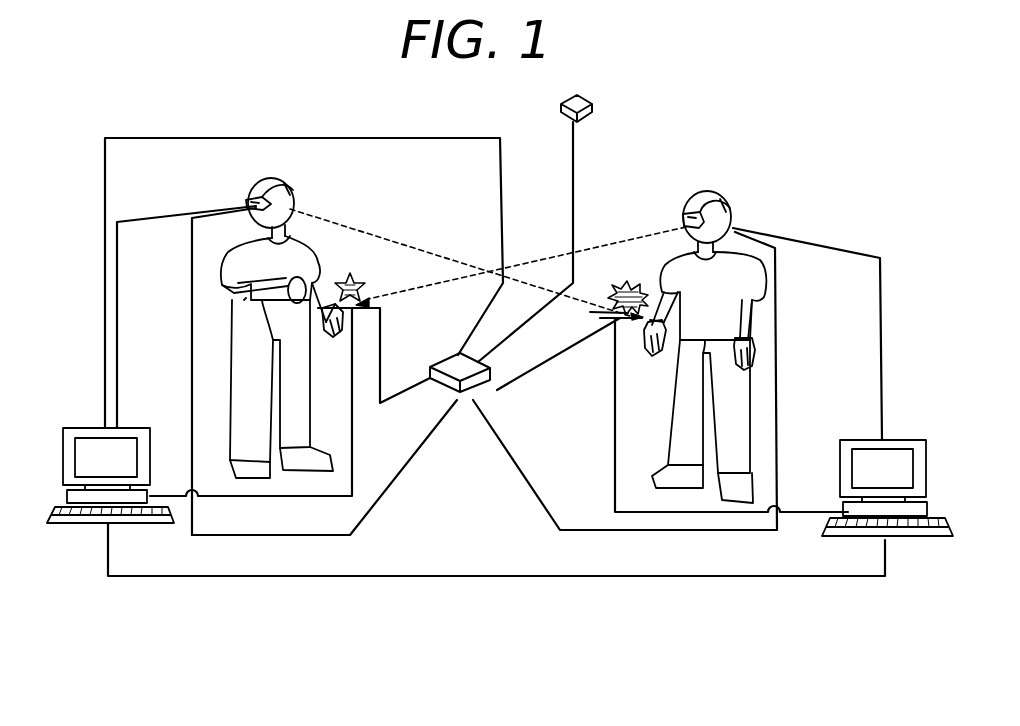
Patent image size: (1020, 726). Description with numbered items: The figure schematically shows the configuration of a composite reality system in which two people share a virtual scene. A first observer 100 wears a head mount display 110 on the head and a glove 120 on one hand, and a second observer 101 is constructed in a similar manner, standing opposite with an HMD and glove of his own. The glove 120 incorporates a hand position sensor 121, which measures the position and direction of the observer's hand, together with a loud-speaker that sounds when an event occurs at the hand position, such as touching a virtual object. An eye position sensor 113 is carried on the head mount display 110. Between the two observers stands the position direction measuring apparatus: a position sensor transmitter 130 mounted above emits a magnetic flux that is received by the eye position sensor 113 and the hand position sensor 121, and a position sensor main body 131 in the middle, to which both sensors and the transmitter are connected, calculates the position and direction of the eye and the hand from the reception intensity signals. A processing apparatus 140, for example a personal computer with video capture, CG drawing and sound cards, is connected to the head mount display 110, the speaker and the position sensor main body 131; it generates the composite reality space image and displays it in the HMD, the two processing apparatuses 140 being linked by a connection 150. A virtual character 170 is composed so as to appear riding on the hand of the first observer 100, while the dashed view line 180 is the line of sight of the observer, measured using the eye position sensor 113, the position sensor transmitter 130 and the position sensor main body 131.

The first observer 100 is at (673, 418).
The second observer 101 is at (305, 415).
The head mount display 110 is at (297, 201).
The eye position sensor 113 is at (283, 183).
The glove 120 is at (337, 334).
The hand position sensor 121 is at (344, 279).
The position sensor transmitter 130 is at (562, 100).
The position sensor main body 131 is at (452, 356).
The processing apparatus 140 is at (80, 430).
The network cable 150 is at (772, 577).
The virtual character 170 is at (604, 302).
The view line 180 is at (630, 233).